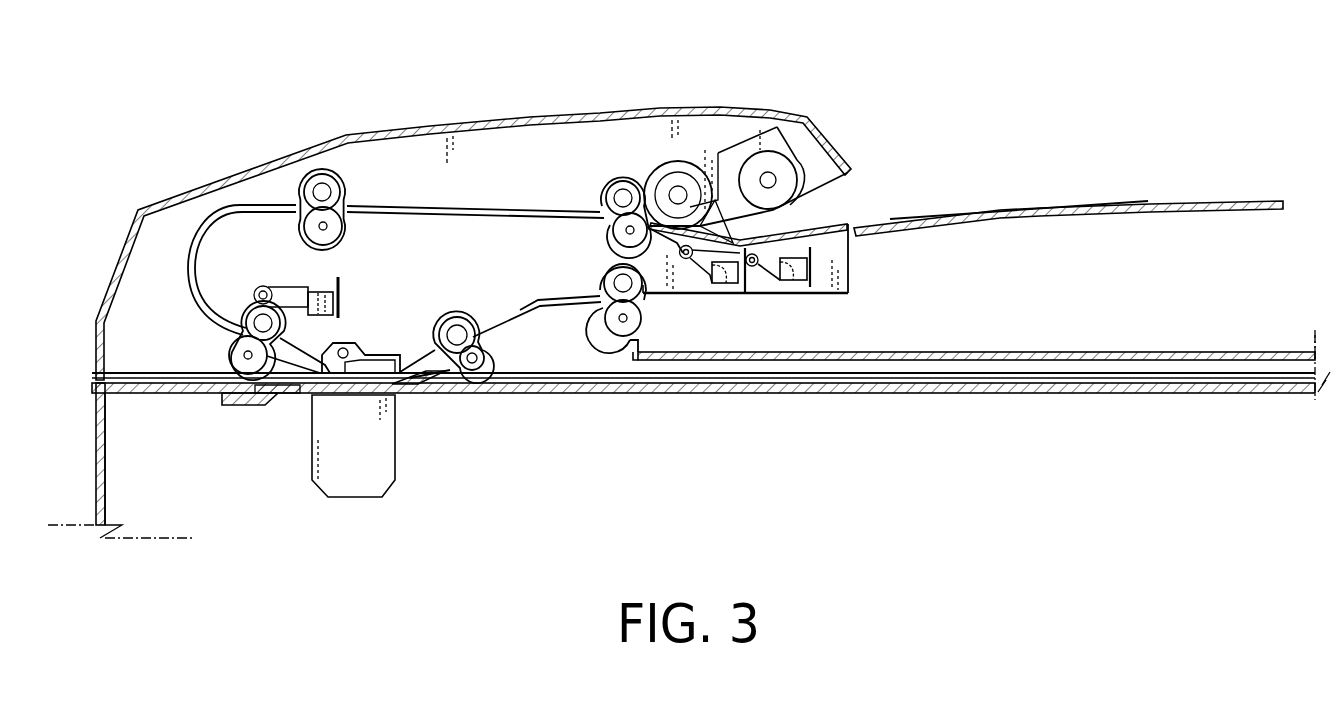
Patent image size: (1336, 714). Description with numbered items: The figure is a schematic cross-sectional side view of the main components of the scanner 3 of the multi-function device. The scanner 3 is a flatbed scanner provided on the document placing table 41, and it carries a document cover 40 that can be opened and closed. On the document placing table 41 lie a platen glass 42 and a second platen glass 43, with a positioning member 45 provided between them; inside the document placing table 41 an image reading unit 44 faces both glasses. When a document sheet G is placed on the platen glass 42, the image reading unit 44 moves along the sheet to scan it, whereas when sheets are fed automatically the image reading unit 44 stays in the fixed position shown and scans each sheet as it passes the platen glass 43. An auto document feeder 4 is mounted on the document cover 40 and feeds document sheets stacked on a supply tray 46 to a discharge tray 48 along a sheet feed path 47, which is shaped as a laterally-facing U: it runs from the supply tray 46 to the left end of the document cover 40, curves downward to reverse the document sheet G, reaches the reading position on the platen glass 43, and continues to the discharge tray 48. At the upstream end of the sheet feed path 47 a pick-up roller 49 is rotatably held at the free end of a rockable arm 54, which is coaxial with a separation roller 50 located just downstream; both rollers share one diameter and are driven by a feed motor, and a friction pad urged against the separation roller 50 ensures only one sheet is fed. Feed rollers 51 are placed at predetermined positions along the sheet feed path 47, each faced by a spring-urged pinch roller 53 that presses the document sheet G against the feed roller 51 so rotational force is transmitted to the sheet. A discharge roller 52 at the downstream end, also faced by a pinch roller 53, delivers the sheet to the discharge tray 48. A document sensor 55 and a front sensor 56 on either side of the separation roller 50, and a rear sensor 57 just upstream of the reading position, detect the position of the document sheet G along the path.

The scanner 3 is at (297, 546).
The auto document feeder 4 is at (410, 82).
The document cover 40 is at (1078, 98).
The document placing table 41 is at (95, 458).
The platen glass 42 is at (793, 393).
The platen glass 43 is at (305, 400).
The image reading unit 44 is at (357, 498).
The positioning member 45 is at (405, 393).
The supply tray 46 is at (1207, 203).
The sheet feed path 47 is at (178, 298).
The discharge tray 48 is at (1058, 352).
The pick-up roller 49 is at (832, 147).
The separation roller 50 is at (660, 172).
The feed rollers 51 is at (333, 190).
The discharge roller 52 is at (606, 288).
The pinch rollers 53 is at (338, 238).
The arm 54 is at (718, 153).
The document sensor 55 is at (826, 265).
The front sensor 56 is at (757, 287).
The rear sensor 57 is at (288, 275).
The document sheet G is at (975, 208).